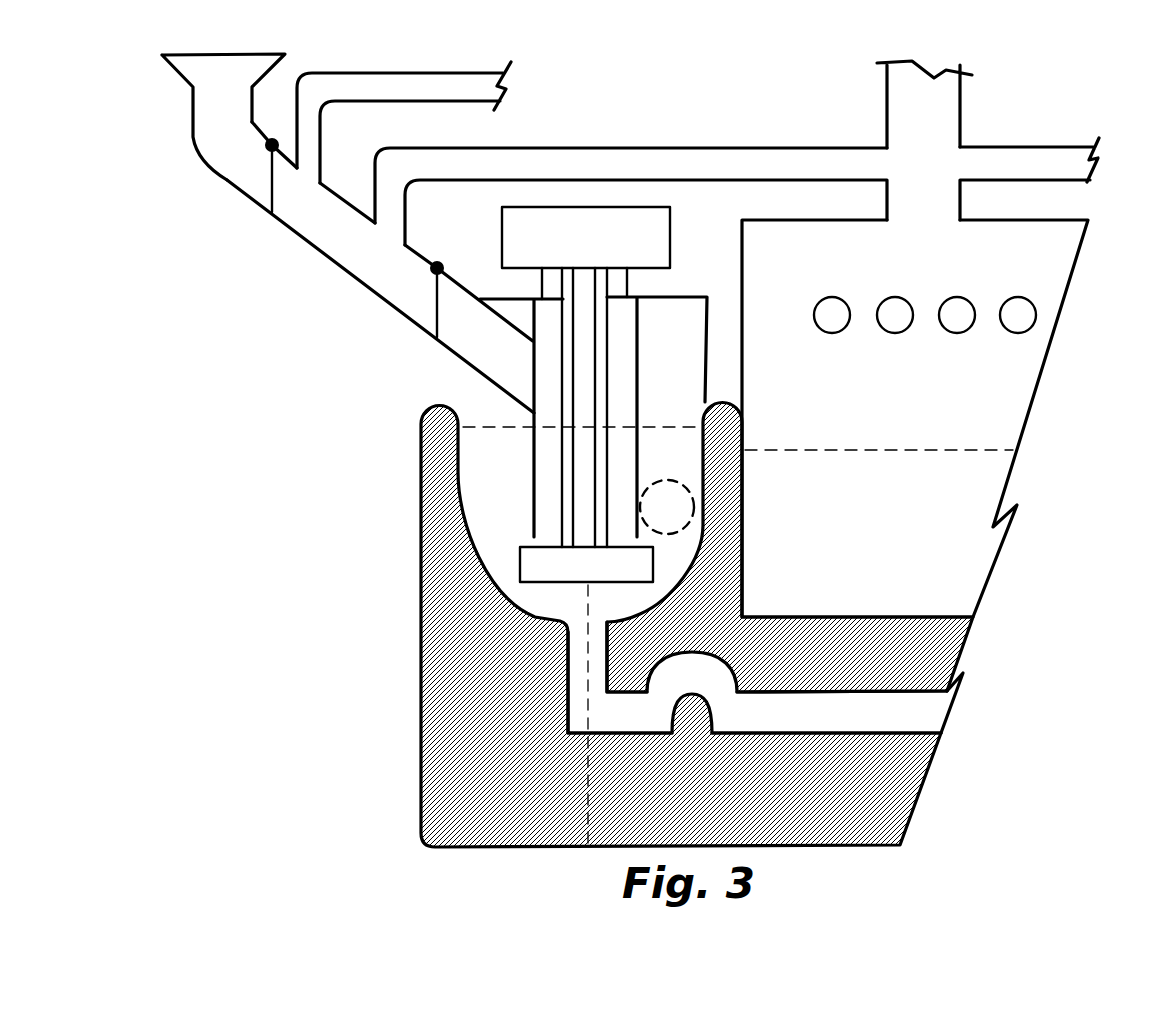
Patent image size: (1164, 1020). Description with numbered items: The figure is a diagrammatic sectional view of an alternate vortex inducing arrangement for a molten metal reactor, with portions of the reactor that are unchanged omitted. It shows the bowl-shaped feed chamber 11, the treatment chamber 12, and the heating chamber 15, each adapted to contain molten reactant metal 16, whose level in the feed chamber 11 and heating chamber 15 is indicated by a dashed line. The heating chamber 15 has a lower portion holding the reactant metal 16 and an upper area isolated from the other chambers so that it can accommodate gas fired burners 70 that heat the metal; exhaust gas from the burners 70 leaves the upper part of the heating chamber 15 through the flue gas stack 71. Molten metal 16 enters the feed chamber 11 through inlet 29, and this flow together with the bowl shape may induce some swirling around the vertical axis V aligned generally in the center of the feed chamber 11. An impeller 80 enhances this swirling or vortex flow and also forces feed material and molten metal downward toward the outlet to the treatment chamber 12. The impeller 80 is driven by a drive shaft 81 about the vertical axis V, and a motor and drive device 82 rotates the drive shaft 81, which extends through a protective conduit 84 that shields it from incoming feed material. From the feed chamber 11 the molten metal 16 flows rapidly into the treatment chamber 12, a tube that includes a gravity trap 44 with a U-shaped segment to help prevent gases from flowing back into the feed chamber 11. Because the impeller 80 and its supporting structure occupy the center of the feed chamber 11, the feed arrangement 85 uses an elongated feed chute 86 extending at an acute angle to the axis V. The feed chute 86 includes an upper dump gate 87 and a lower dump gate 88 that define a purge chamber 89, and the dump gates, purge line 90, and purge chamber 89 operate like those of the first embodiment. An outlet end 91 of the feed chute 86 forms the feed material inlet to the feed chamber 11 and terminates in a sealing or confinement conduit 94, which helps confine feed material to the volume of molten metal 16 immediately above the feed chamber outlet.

The feed chamber 11 is at (393, 455).
The treatment chamber 12 is at (754, 727).
The heating chamber 15 is at (993, 215).
The molten reactant metal 16 is at (907, 539).
The inlet 29 is at (687, 473).
The gravity trap 44 is at (614, 727).
The gas fired burners 70 is at (821, 300).
The flue gas stack 71 is at (960, 97).
The impeller 80 is at (533, 546).
The drive shaft 81 is at (597, 350).
The motor and drive device 82 is at (631, 255).
The protective conduit 84 is at (608, 383).
The feed arrangement 85 is at (289, 247).
The feed chute 86 is at (197, 147).
The upper dump gate 87 is at (267, 182).
The lower dump gate 88 is at (437, 307).
The purge chamber 89 is at (327, 251).
The purge line 90 is at (718, 147).
The outlet end 91 is at (477, 357).
The sealing or confinement conduit 94 is at (637, 408).
The vertical axis V is at (588, 603).